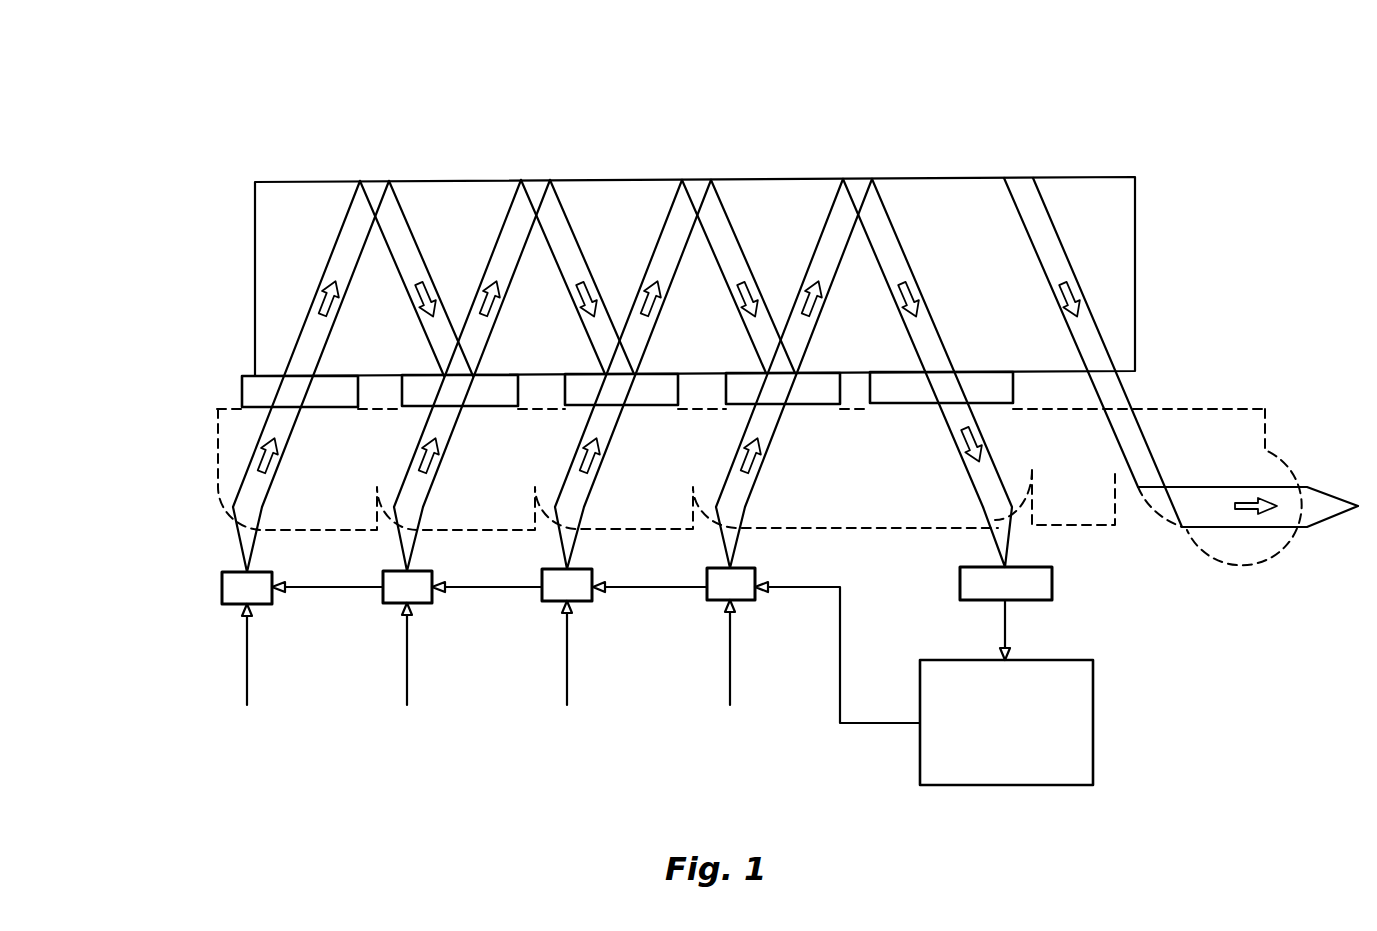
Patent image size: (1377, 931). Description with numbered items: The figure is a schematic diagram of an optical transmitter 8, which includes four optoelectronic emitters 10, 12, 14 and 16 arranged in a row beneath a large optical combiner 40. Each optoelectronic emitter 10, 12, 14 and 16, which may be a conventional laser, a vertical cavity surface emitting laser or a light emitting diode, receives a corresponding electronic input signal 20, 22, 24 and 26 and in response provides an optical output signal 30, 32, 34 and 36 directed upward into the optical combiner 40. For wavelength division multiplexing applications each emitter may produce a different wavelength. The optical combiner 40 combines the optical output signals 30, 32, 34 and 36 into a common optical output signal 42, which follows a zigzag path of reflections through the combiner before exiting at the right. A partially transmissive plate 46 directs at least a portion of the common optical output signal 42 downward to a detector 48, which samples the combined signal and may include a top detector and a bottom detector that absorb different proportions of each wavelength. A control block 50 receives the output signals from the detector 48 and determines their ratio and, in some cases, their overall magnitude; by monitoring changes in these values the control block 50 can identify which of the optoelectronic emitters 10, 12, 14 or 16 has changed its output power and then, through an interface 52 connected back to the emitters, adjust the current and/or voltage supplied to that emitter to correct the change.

The optical transmitter 8 is at (1088, 91).
The optoelectronic emitter 10 is at (223, 598).
The optoelectronic emitter 12 is at (383, 598).
The optoelectronic emitter 14 is at (543, 598).
The optoelectronic emitter 16 is at (707, 598).
The electronic input signal 20 is at (247, 667).
The electronic input signal 22 is at (407, 667).
The electronic input signal 24 is at (567, 667).
The electronic input signal 26 is at (730, 665).
The optical output signal 30 is at (250, 488).
The optical output signal 32 is at (410, 488).
The optical output signal 34 is at (568, 488).
The optical output signal 36 is at (734, 488).
The optical combiner 40 is at (187, 202).
The common optical output signal 42 is at (883, 237).
The partially transmissive plate 46 is at (888, 409).
The detector 48 is at (1052, 583).
The control block 50 is at (1040, 763).
The interface 52 is at (840, 723).